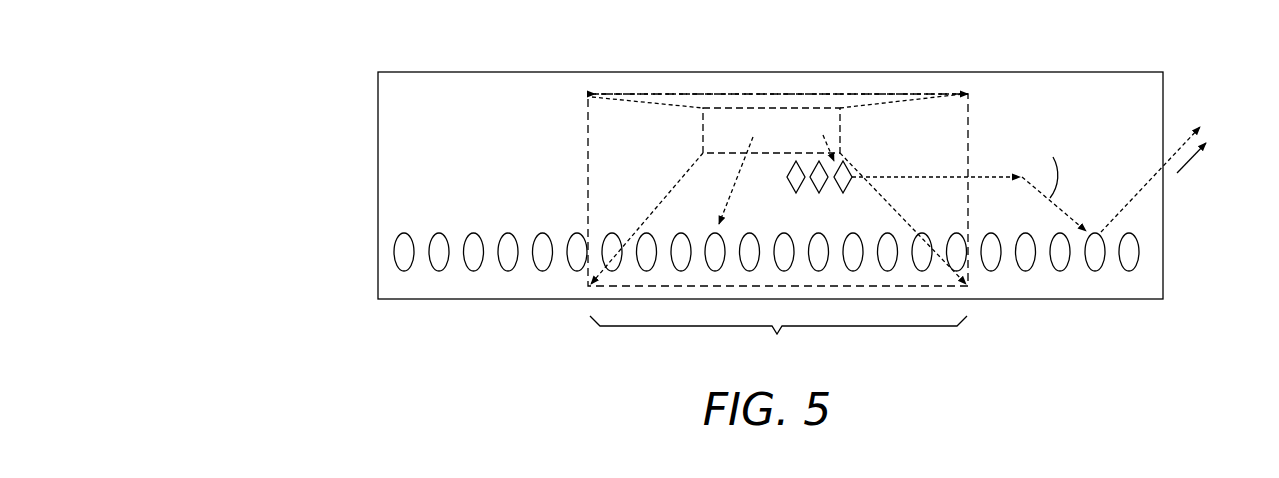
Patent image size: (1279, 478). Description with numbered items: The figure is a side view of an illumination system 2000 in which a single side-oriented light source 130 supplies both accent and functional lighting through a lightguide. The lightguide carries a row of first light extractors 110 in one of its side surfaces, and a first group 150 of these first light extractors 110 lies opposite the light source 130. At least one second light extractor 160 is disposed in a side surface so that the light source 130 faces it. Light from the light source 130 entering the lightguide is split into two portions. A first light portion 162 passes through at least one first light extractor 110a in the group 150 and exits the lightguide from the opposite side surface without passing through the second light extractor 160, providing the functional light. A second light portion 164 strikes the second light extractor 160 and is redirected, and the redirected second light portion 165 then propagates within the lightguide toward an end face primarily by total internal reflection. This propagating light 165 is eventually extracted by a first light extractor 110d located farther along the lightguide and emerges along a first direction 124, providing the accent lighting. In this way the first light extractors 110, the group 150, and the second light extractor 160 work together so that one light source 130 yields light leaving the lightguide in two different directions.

The illumination system 2000 is at (374, 41).
The first light extractors 110 is at (439, 257).
The first light extractor 110a is at (683, 257).
The first light extractor 110d is at (1096, 255).
The first direction 124 is at (1186, 166).
The light source 130 is at (702, 130).
The first group of first light extractors 150 is at (778, 230).
The second light extractor 160 is at (808, 158).
The first light portion 162 is at (743, 165).
The second light portion 164 is at (830, 157).
The redirected second light portion 165 is at (997, 176).